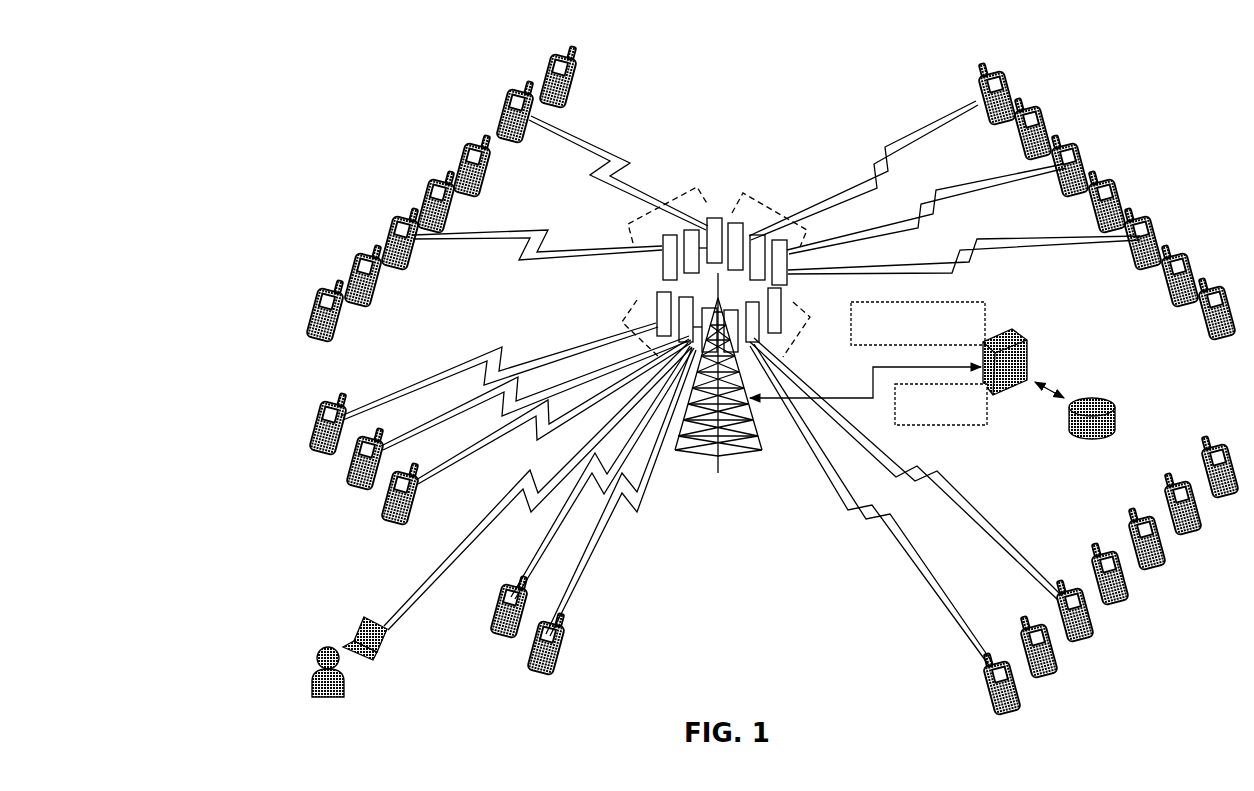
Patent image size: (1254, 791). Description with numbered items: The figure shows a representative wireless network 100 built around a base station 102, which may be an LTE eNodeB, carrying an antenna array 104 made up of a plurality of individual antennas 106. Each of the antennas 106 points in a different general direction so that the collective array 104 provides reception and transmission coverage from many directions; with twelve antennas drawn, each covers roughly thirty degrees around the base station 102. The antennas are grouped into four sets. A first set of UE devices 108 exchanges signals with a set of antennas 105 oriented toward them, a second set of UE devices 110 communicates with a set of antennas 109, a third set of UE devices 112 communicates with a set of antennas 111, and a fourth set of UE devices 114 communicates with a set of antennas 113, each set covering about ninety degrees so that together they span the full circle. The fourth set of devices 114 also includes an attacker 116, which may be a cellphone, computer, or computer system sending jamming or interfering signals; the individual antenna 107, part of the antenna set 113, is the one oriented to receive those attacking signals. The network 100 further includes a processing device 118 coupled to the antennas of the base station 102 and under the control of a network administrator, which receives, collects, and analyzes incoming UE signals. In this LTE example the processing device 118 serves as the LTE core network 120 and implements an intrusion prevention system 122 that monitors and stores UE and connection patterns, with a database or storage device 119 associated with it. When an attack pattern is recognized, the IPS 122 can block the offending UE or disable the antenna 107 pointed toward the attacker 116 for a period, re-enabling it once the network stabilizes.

The wireless network 100 is at (332, 97).
The base station 102 is at (734, 480).
The antenna array 104 is at (676, 209).
The set of antennas 105 is at (640, 188).
The individual antennas 106 is at (657, 260).
The individual antenna 107 is at (692, 300).
The first set of UE devices 108 is at (375, 194).
The set of antennas 109 is at (758, 202).
The second set of UE devices 110 is at (1143, 152).
The set of antennas 111 is at (788, 338).
The third set of UE devices 112 is at (1146, 640).
The set of antennas 113 is at (612, 317).
The fourth set of UE devices 114 is at (314, 531).
The attacker 116 is at (303, 681).
The processing device 118 is at (1030, 347).
The database or storage device 119 is at (1106, 400).
The LTE core network 120 is at (955, 300).
The intrusion prevention system 122 is at (950, 428).